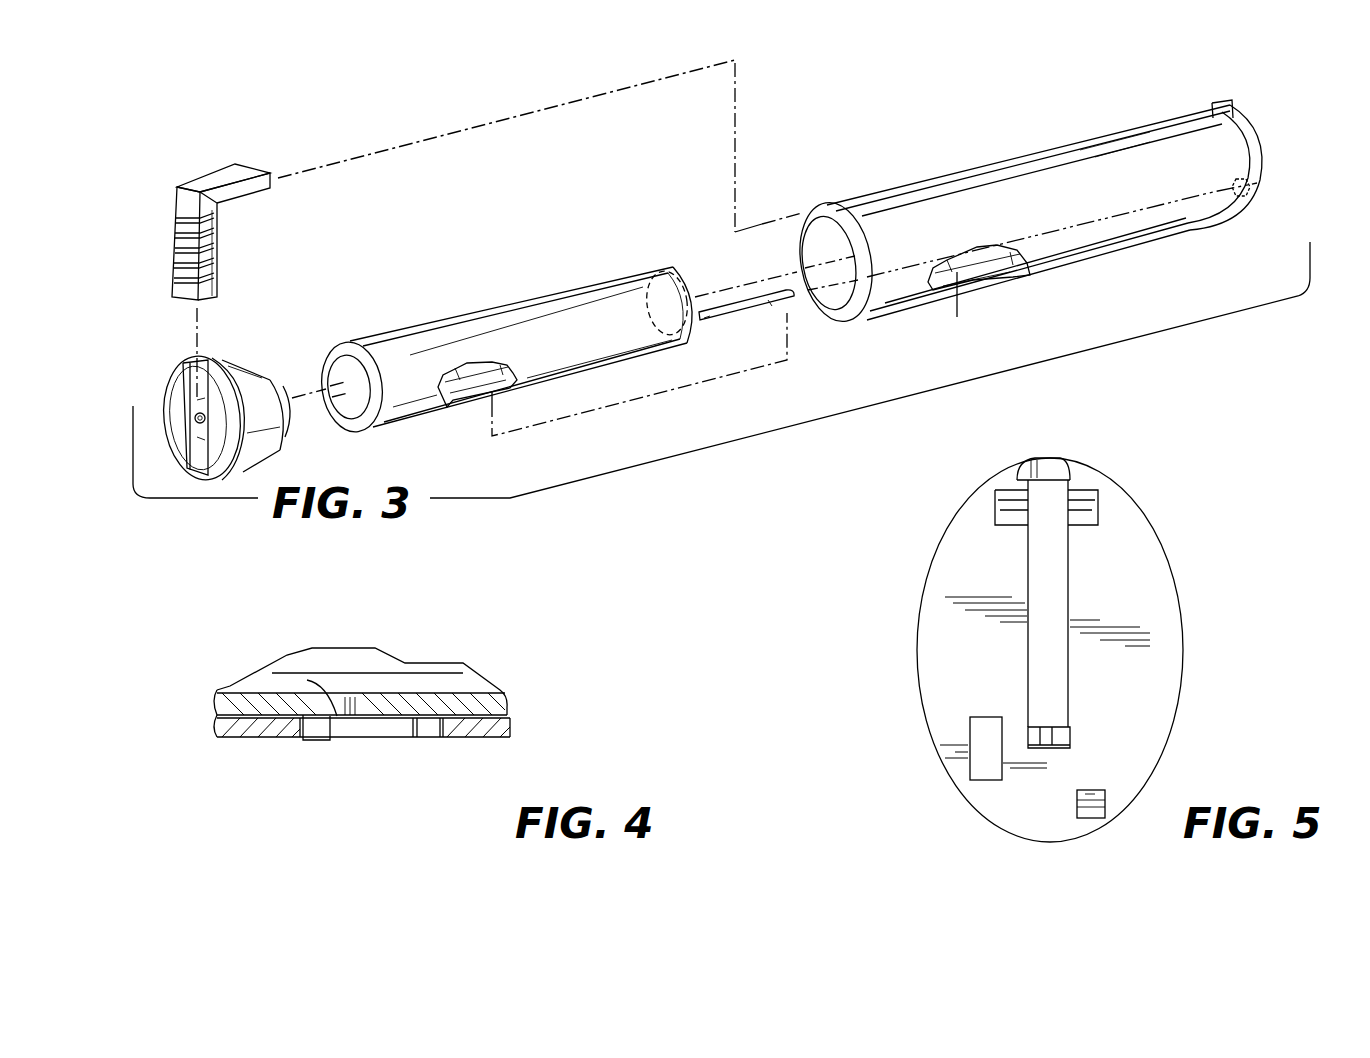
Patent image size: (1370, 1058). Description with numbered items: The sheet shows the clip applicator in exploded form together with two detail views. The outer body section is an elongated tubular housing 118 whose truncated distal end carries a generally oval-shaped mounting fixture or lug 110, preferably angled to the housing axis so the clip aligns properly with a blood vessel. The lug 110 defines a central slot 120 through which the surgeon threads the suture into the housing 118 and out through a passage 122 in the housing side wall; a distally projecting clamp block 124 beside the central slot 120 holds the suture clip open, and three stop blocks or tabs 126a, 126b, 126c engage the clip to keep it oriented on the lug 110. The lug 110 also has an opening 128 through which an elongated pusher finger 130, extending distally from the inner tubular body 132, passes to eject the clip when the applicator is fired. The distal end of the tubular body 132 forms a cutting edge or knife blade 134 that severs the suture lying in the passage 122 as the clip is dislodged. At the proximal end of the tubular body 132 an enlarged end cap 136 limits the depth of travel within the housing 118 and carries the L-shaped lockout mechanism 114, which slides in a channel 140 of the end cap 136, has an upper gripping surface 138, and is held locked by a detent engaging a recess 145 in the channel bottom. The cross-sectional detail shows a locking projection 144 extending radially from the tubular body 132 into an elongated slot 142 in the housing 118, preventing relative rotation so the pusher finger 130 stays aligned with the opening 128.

In FIG. 5, the lug 110 is at (925, 630).
In FIG. 3, the lockout mechanism 114 is at (208, 214).
In FIG. 3, the tubular housing 118 is at (1059, 213).
In FIG. 4, the tubular housing 118 is at (493, 737).
In FIG. 5, the central slot 120 is at (1058, 589).
In FIG. 3, the passage 122 is at (1233, 133).
In FIG. 5, the clamp block 124 is at (1063, 737).
In FIG. 5, the stop block 126a is at (1007, 503).
In FIG. 5, the stop block 126b is at (1090, 503).
In FIG. 5, the stop block 126c is at (1092, 792).
In FIG. 3, the opening 128 is at (1257, 183).
In FIG. 5, the opening 128 is at (987, 737).
In FIG. 3, the pusher finger 130 is at (751, 310).
In FIG. 3, the tubular body 132 is at (519, 322).
In FIG. 4, the tubular body 132 is at (500, 707).
In FIG. 3, the knife blade 134 is at (684, 266).
In FIG. 3, the end cap 136 is at (221, 393).
In FIG. 3, the gripping surface 138 is at (193, 238).
In FIG. 3, the channel 140 is at (181, 391).
In FIG. 4, the slot 142 is at (440, 737).
In FIG. 3, the locking projection 144 is at (477, 384).
In FIG. 4, the locking projection 144 is at (317, 740).
In FIG. 3, the recess 145 is at (192, 418).